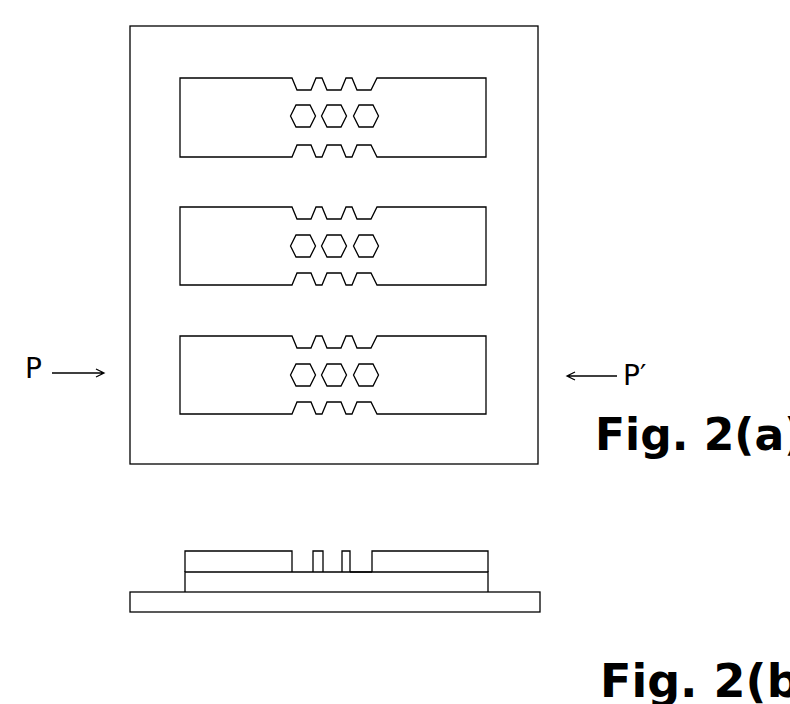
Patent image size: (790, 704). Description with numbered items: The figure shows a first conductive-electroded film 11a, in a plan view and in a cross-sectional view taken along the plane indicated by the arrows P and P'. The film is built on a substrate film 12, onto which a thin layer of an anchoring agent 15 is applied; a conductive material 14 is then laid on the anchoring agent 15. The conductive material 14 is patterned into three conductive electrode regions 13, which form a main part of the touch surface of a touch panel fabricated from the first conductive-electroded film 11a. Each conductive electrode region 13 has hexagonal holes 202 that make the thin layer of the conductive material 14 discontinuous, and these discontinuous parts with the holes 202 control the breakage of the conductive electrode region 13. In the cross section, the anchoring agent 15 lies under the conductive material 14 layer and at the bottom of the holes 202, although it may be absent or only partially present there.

In FIG. 2A, the first conductive-electroded film 11a is at (112, 84).
In FIG. 2A, the substrate film 12 is at (523, 61).
In FIG. 2B, the substrate film 12 is at (525, 603).
In FIG. 2A, the conductive electrode region 13 is at (476, 118).
In FIG. 2B, the conductive material 14 is at (478, 562).
In FIG. 2B, the anchoring agent 15 is at (478, 583).
In FIG. 2A, the hexagonal holes 202 is at (333, 374).
In FIG. 2B, the hexagonal holes 202 is at (362, 560).